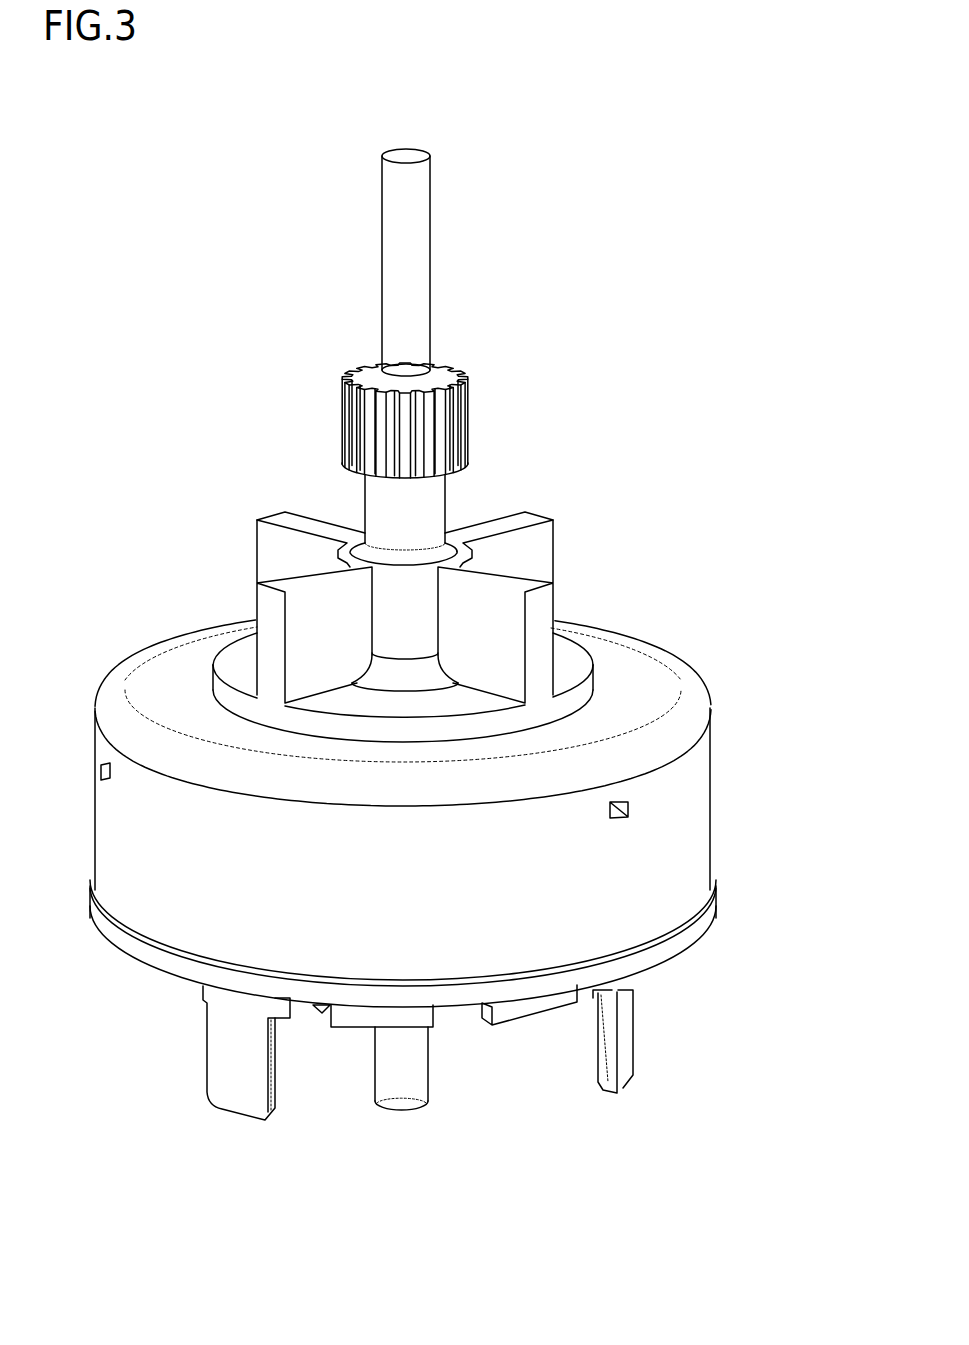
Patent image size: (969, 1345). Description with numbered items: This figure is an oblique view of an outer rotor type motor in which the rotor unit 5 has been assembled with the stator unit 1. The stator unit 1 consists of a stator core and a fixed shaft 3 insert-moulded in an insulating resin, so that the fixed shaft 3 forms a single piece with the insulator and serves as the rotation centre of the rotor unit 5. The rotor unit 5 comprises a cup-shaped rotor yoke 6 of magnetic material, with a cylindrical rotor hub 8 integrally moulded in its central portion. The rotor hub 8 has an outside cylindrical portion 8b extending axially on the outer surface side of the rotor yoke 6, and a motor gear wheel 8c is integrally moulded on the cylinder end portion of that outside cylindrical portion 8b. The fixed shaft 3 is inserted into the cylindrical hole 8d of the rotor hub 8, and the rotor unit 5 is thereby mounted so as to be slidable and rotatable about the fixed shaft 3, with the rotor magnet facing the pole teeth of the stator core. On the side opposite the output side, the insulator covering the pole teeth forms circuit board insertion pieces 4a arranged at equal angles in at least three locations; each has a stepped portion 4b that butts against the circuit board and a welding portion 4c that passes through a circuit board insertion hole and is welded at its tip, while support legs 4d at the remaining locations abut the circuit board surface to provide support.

The stator unit 1 is at (444, 1117).
The fixed shaft 3 is at (427, 211).
The circuit board insertion piece 4a is at (425, 1102).
The stepped portion 4b is at (283, 1019).
The welding portion 4c is at (247, 1108).
The support leg 4d is at (508, 1027).
The rotor unit 5 is at (235, 448).
The rotor yoke 6 is at (680, 668).
The rotor hub 8 is at (567, 620).
The outside cylindrical portion 8b is at (447, 500).
The motor gear wheel 8c is at (468, 407).
The cylindrical hole 8d is at (410, 370).